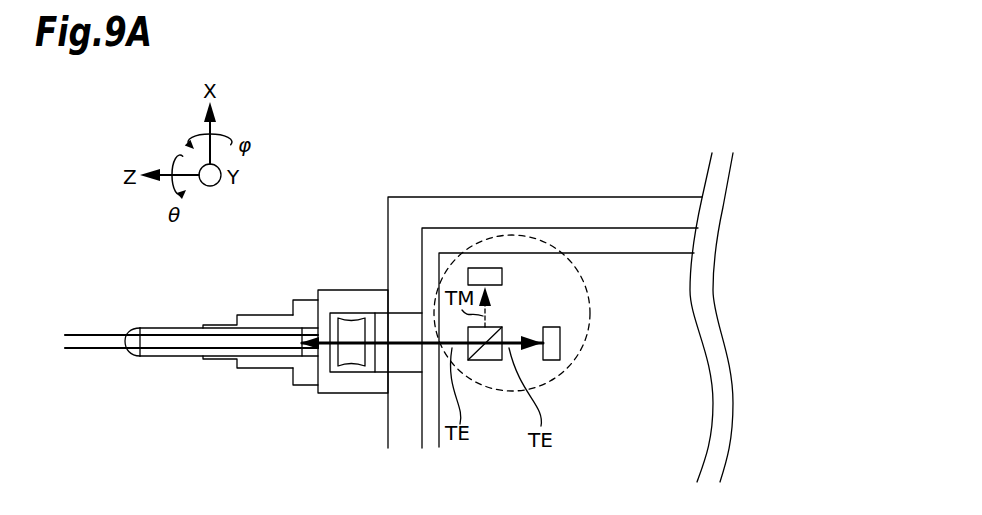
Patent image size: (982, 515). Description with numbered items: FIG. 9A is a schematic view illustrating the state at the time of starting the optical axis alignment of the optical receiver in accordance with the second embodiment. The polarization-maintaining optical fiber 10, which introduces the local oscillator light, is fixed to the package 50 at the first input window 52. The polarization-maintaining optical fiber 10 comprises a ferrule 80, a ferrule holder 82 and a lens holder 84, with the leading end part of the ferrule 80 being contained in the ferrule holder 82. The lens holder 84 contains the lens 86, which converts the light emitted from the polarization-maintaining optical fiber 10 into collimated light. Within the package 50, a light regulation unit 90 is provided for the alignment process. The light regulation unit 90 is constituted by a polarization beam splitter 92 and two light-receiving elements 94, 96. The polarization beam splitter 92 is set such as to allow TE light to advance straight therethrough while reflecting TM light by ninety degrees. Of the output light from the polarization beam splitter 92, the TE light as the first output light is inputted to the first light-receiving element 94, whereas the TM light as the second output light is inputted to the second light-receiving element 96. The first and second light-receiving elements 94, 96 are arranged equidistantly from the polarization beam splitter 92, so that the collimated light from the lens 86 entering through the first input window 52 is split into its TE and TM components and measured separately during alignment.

The polarization-maintaining optical fiber 10 is at (160, 313).
The package 50 is at (478, 196).
The first input window 52 is at (408, 365).
The ferrule 80 is at (217, 324).
The ferrule holder 82 is at (302, 299).
The lens holder 84 is at (364, 298).
The lens 86 is at (347, 375).
The light regulation unit 90 is at (467, 251).
The polarization beam splitter 92 is at (487, 362).
The first light-receiving element 94 is at (551, 362).
The second light-receiving element 96 is at (502, 278).